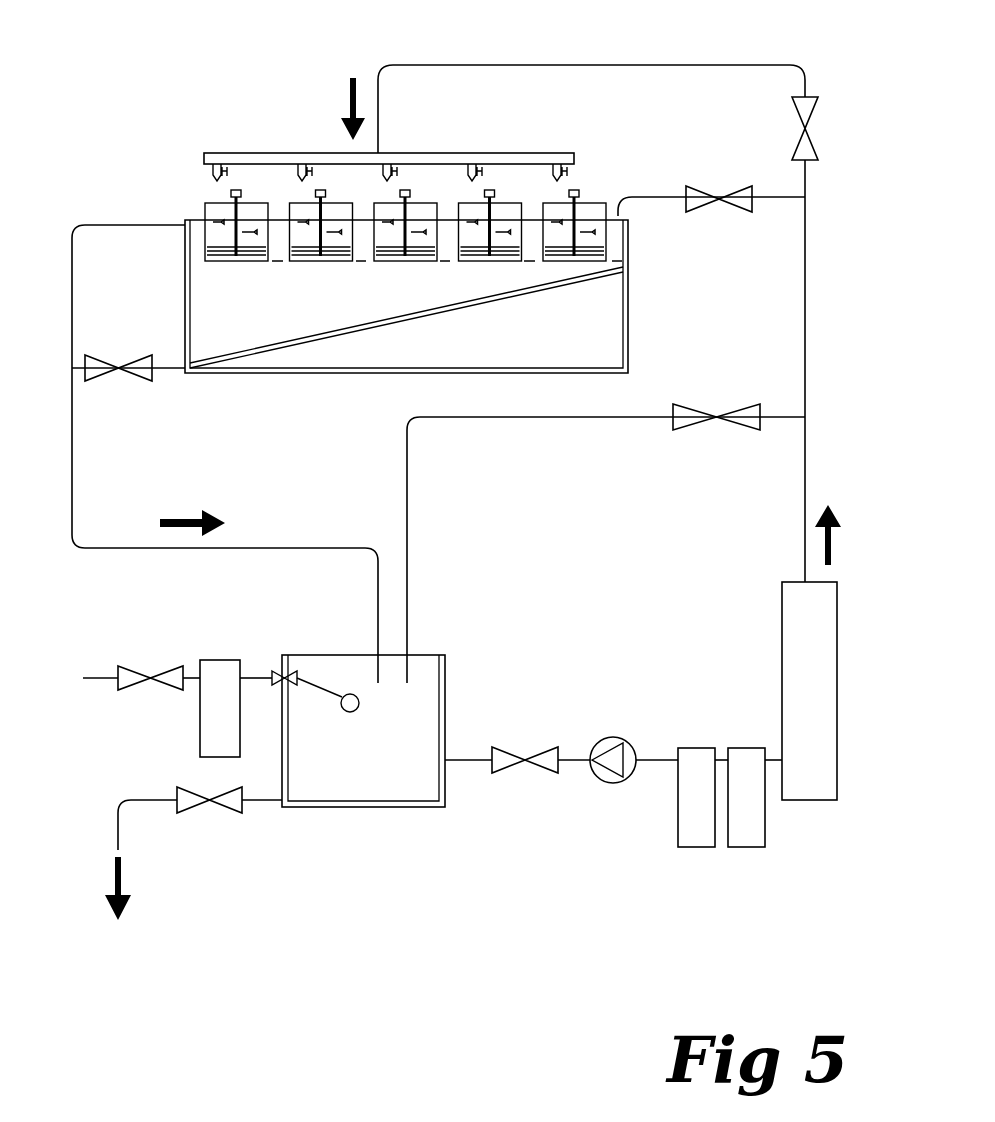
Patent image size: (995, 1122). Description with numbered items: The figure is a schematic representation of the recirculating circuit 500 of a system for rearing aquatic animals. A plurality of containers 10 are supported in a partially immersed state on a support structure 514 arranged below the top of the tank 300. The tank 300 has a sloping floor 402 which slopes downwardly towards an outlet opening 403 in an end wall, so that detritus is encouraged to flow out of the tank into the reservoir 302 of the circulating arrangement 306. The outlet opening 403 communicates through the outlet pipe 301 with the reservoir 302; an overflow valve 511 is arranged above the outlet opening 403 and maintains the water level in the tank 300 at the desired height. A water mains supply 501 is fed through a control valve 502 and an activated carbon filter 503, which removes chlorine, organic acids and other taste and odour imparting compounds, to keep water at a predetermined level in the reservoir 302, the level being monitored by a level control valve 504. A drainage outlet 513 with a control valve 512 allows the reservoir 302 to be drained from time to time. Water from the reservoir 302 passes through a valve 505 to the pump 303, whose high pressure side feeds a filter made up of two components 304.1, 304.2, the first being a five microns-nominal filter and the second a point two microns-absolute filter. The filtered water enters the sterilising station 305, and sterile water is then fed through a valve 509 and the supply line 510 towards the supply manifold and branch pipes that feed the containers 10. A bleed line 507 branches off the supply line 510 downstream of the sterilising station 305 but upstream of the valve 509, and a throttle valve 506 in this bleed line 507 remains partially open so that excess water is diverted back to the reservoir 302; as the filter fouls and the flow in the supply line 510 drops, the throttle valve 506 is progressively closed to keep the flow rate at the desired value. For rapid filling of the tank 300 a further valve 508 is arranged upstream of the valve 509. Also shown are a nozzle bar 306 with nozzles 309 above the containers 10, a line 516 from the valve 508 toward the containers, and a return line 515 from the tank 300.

The recirculating circuit 500 is at (200, 16).
The supply line 510 is at (433, 62).
The valve 509 is at (815, 158).
The circulating arrangement 306 is at (445, 150).
The nozzles 309 is at (207, 176).
The container 10 is at (405, 259).
The support structure 514 is at (190, 268).
The sloping floor 402 is at (585, 288).
The line 516 is at (618, 216).
The further valve 508 is at (733, 152).
The return line 515 is at (185, 222).
The outlet opening 403 is at (128, 385).
The overflow valve 511 is at (150, 385).
The tank 300 is at (253, 374).
The outlet pipe 301 is at (72, 481).
The bleed line 507 is at (475, 420).
The throttle valve 506 is at (687, 430).
The sterilising station 305 is at (782, 603).
The water mains supply 501 is at (88, 676).
The control valve 502 is at (140, 690).
The activated carbon filter 503 is at (200, 660).
The level control valve 504 is at (272, 672).
The reservoir 302 is at (397, 808).
The valve 505 is at (507, 773).
The pump 303 is at (616, 737).
The filter component 304.1 is at (682, 847).
The filter component 304.2 is at (768, 847).
The control valve 512 is at (200, 813).
The drainage outlet 513 is at (116, 818).